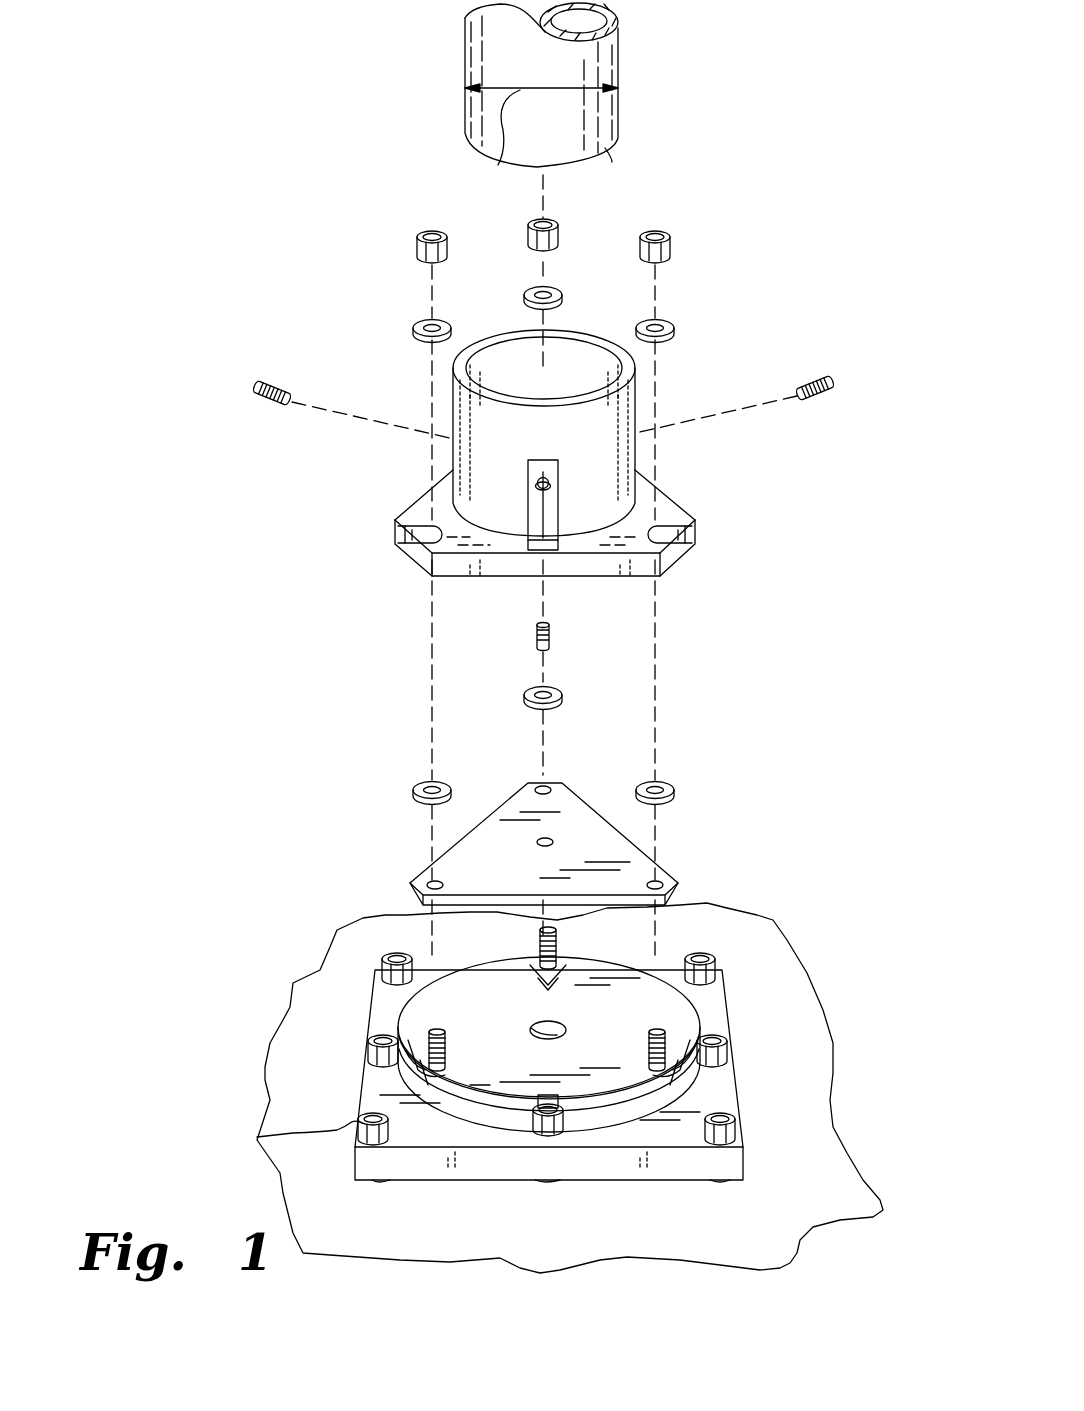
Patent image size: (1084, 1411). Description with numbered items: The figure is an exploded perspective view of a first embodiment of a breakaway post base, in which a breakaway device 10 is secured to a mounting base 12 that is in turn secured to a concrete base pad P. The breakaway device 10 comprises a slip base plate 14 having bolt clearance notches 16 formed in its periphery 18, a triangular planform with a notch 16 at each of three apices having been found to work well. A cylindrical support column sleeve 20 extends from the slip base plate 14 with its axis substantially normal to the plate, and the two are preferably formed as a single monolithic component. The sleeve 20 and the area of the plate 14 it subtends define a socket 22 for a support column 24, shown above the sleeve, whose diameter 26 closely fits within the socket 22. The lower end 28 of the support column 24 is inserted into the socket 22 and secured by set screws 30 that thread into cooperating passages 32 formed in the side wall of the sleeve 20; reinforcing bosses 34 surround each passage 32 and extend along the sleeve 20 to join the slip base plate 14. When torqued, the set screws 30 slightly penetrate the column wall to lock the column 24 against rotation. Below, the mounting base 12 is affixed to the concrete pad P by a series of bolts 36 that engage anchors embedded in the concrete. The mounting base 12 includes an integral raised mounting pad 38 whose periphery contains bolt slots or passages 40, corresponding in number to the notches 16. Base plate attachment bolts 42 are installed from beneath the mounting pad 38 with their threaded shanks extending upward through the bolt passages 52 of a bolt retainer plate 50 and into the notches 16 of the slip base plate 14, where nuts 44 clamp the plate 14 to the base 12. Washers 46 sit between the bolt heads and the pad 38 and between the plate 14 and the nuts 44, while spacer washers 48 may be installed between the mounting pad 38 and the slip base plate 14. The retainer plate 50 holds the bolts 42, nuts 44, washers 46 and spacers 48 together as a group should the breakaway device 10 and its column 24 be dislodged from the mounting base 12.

The breakaway device 10 is at (212, 512).
The mounting base 12 is at (345, 1011).
The slip base plate 14 is at (672, 505).
The bolt clearance notches 16 is at (418, 553).
The periphery 18 is at (510, 577).
The support column sleeve 20 is at (635, 395).
The socket 22 is at (505, 355).
The support column 24 is at (465, 55).
The diameter 26 is at (498, 165).
The lower end 28 is at (605, 150).
The set screws 30 is at (255, 388).
The set screw passages 32 is at (532, 480).
The reinforcing bosses 34 is at (556, 484).
The bolts 36 is at (388, 960).
The raised mounting pad 38 is at (505, 1024).
The bolt slots or passages 40 is at (540, 950).
The base plate attachment bolts 42 is at (552, 982).
The nuts 44 is at (417, 243).
The washers 46 is at (412, 330).
The spacer washers 48 is at (412, 782).
The bolt retainer plate 50 is at (510, 866).
The bolt passages 52 is at (538, 785).
The concrete base pad P is at (282, 1068).